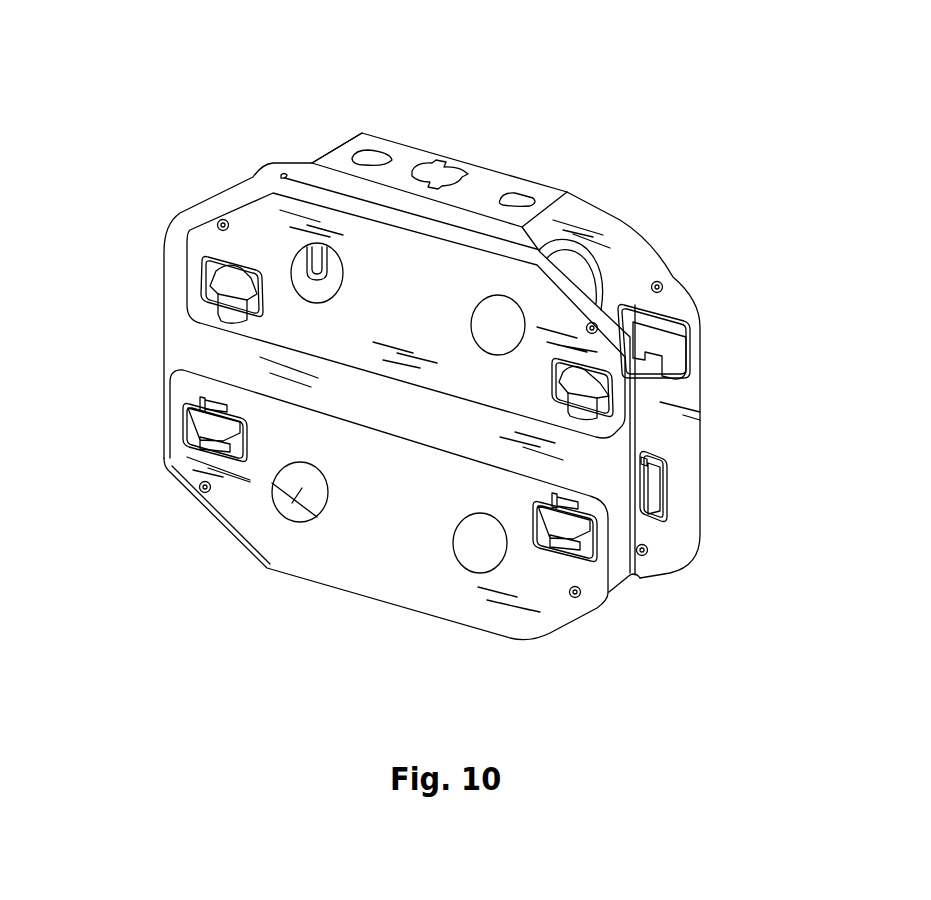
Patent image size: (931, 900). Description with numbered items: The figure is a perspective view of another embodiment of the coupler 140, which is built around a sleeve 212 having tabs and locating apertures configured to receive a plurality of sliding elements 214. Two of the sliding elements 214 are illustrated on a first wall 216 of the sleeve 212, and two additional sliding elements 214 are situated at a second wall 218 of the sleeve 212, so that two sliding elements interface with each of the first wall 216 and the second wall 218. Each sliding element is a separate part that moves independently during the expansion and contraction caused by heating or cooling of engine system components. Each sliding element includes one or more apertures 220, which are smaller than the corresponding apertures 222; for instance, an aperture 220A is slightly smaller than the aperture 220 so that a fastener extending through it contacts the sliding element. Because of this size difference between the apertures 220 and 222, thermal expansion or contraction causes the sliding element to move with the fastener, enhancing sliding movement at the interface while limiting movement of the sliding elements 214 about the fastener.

The coupler 140 is at (520, 122).
The sleeve 212 is at (402, 148).
The sliding elements 214 is at (203, 238).
The first wall 216 is at (178, 346).
The second wall 218 is at (663, 546).
The apertures 220 is at (300, 518).
The aperture 220A is at (570, 260).
The apertures 222 is at (599, 268).